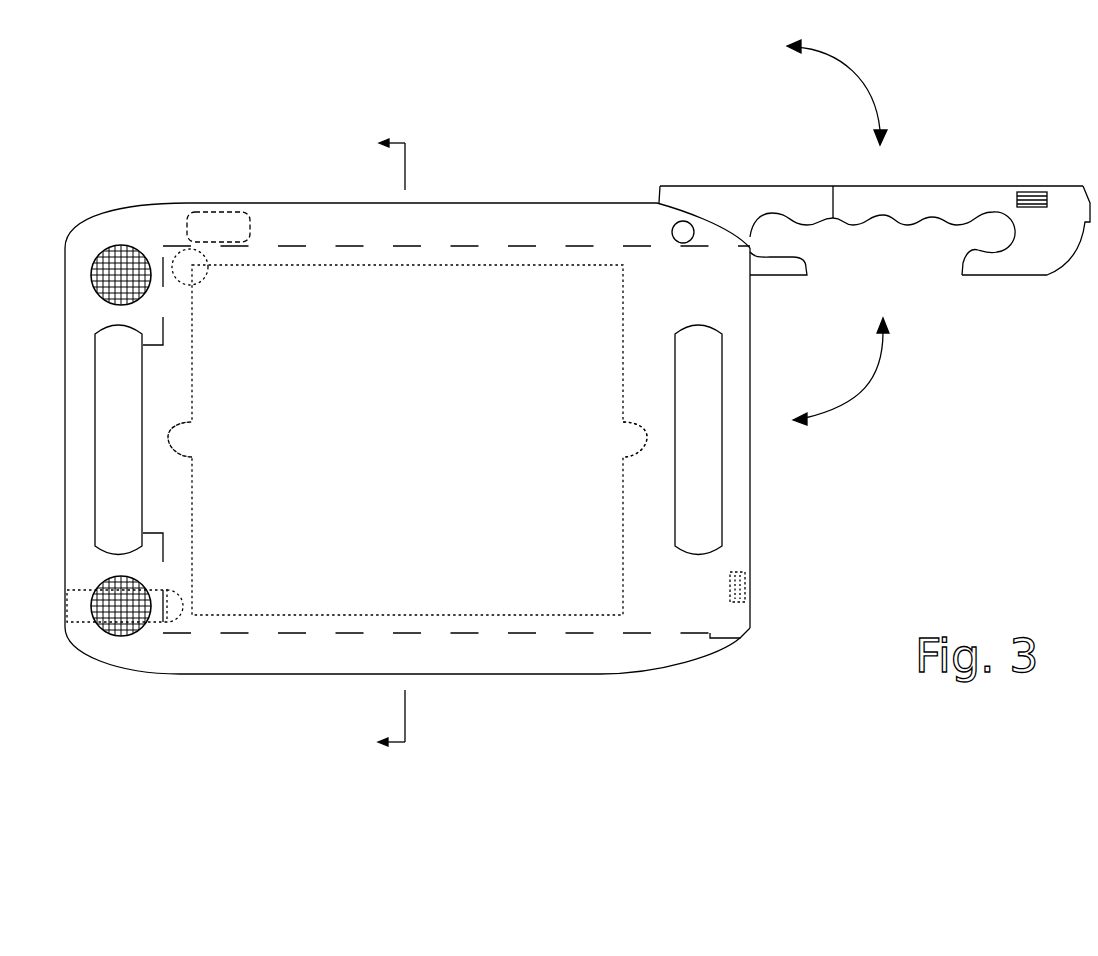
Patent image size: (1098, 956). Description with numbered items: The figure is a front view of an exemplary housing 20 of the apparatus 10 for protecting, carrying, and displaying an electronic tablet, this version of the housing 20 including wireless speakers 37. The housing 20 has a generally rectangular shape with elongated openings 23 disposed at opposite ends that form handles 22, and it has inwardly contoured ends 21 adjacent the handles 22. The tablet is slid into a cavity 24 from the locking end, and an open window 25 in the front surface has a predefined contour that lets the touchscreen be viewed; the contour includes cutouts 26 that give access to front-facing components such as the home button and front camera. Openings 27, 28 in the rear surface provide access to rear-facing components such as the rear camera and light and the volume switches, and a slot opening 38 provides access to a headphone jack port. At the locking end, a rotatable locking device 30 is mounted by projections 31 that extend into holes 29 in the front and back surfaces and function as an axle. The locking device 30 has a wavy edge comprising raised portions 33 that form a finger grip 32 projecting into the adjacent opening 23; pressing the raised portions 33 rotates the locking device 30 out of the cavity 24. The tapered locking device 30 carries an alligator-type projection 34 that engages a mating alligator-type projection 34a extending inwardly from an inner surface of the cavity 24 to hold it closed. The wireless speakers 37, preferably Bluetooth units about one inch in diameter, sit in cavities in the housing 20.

The apparatus 10 is at (1000, 444).
The housing 20 is at (254, 677).
The inwardly contoured ends 21 is at (101, 657).
The handles 22 is at (124, 182).
The elongated openings 23 is at (408, 440).
The cavity 24 is at (290, 266).
The open window 25 is at (350, 248).
The cutouts 26 is at (204, 437).
The opening 27 is at (201, 280).
The opening 28 is at (212, 212).
The holes 29 is at (645, 227).
The locking device 30 is at (990, 185).
The projections 31 is at (678, 243).
The finger grip 32 is at (932, 220).
The raised portions 33 is at (853, 226).
The alligator-type projection 34 is at (1036, 190).
The mating alligator-type projection 34a is at (748, 588).
The wireless speakers 37 is at (93, 258).
The slot opening 38 is at (82, 623).